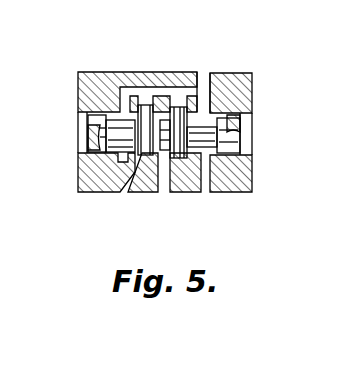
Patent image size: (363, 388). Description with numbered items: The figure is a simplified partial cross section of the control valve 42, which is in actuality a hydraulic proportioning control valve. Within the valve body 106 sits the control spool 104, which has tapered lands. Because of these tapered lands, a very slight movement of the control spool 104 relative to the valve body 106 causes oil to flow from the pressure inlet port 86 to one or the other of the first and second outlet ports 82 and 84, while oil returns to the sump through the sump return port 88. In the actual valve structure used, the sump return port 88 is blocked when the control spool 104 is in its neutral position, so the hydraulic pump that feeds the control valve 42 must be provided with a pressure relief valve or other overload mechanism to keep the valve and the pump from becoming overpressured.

The control valve 42 is at (103, 72).
The first outlet port 82 is at (123, 188).
The second outlet port 84 is at (205, 188).
The pressure inlet port 86 is at (205, 82).
The sump return port 88 is at (160, 188).
The control spool 104 is at (100, 124).
The valve body 106 is at (238, 82).